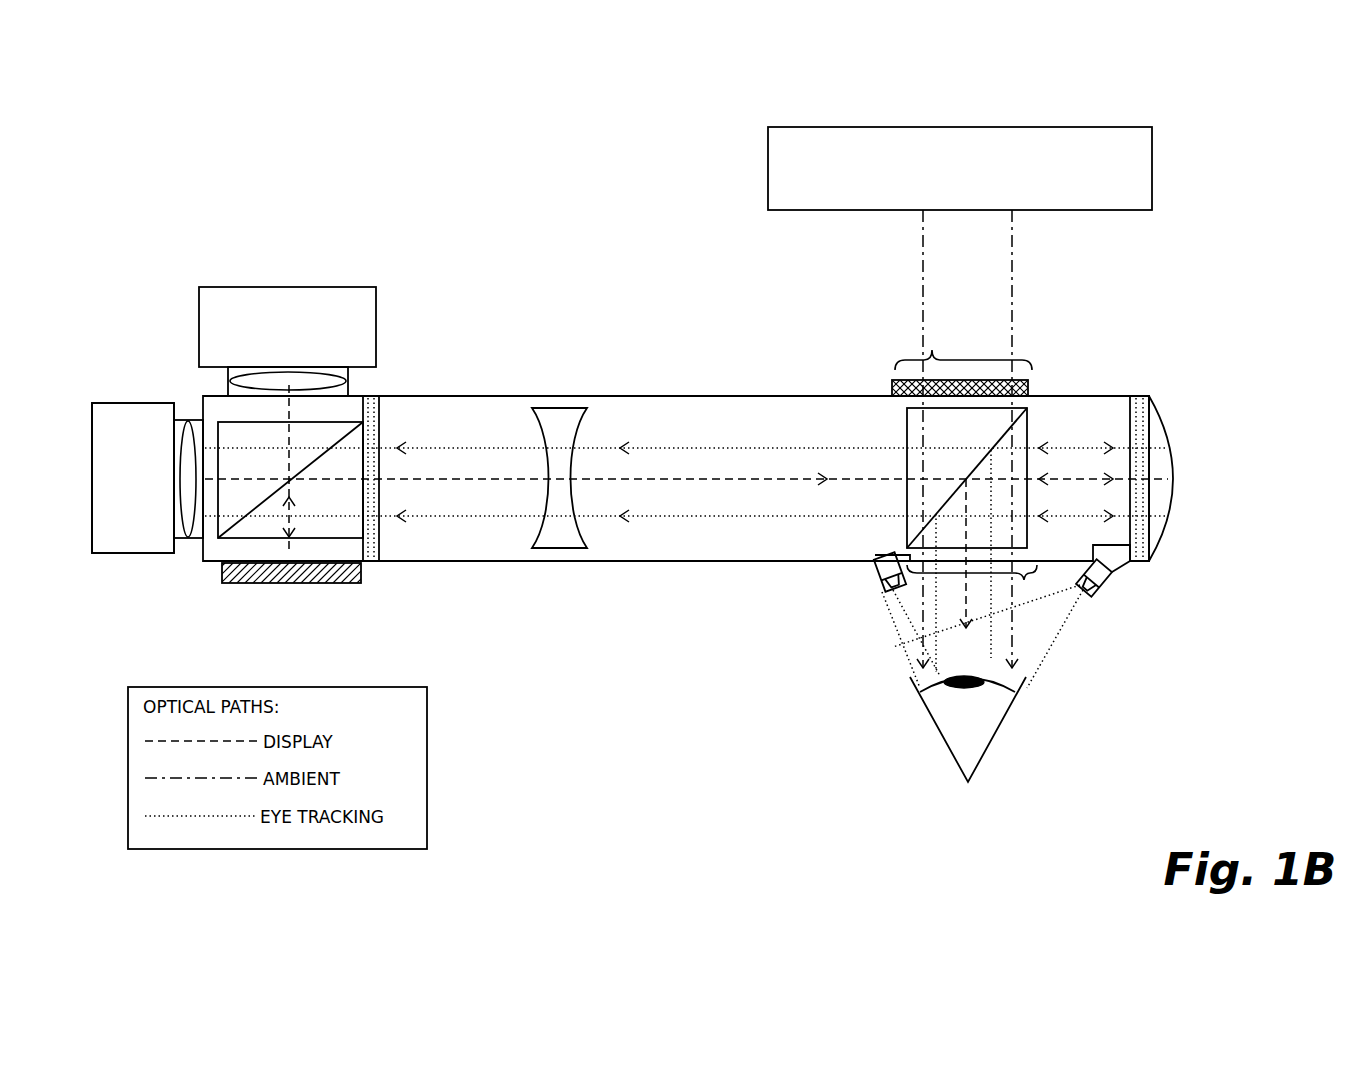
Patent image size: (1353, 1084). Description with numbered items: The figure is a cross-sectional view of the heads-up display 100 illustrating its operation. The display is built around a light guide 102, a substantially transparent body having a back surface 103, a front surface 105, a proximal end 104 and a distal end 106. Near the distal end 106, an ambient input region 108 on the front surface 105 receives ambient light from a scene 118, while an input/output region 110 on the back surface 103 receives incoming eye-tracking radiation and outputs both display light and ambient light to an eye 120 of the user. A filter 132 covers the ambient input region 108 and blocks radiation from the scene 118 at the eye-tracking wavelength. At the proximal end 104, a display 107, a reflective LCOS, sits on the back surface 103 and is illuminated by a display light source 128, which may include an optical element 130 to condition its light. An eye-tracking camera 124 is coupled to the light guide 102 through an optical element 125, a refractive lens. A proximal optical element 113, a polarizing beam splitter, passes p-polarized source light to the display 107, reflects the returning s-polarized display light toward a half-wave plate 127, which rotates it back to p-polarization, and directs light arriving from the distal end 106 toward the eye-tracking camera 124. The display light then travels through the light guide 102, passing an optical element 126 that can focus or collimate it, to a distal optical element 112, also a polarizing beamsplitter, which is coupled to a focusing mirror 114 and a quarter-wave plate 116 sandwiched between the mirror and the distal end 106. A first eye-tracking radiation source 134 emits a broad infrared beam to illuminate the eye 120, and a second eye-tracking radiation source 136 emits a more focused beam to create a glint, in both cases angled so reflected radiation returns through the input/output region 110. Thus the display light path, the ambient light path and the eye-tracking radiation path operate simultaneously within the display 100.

The heads-up display 100 is at (549, 243).
The light guide 102 is at (625, 545).
The back surface 103 is at (736, 558).
The proximal end 104 is at (122, 395).
The front surface 105 is at (453, 395).
The distal end 106 is at (1190, 540).
The display 107 is at (264, 585).
The ambient input region 108 is at (931, 352).
The input/output region 110 is at (1025, 582).
The distal optical element 112 is at (905, 412).
The proximal optical element 113 is at (354, 432).
The focusing mirror 114 is at (1158, 433).
The quarter-wave plate 116 is at (1139, 398).
The scene 118 is at (960, 168).
The eye 120 is at (975, 735).
The eye-tracking camera 124 is at (133, 478).
The optical element 125 is at (188, 540).
The optical element 126 is at (560, 411).
The half-wave plate 127 is at (376, 553).
The display light source 128 is at (287, 327).
The optical element 130 is at (232, 383).
The filter 132 is at (890, 381).
The first eye-tracking radiation source 134 is at (1108, 585).
The second eye-tracking radiation source 136 is at (878, 560).